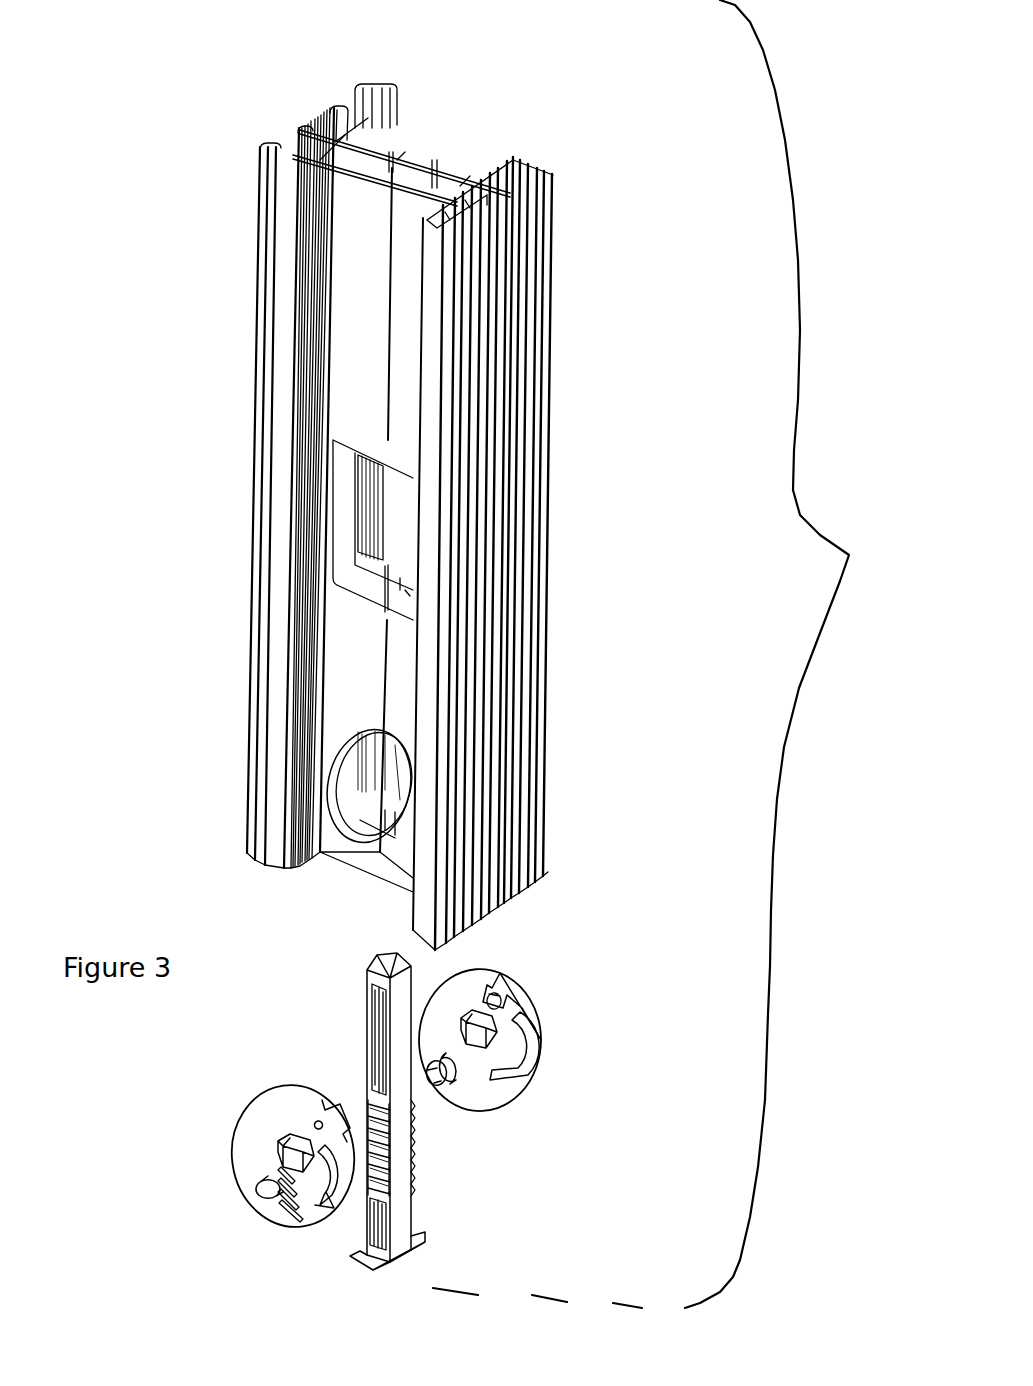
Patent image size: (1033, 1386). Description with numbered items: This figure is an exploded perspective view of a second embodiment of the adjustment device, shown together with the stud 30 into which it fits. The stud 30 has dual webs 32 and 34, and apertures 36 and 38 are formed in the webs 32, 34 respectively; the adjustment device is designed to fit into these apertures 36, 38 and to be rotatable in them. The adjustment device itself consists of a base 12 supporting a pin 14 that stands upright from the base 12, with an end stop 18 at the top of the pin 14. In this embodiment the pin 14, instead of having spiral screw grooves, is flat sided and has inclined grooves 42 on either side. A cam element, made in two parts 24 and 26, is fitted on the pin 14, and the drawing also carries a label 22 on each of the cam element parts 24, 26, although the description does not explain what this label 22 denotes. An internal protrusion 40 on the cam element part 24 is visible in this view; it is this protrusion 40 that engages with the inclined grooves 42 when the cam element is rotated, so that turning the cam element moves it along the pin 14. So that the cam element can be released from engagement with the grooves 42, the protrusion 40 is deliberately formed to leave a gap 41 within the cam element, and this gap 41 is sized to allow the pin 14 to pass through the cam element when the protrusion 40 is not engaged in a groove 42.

The base 12 is at (400, 1253).
The pin 14 is at (368, 1008).
The end stop 18 is at (370, 982).
The hex opening 22 is at (477, 1028).
The cam element part 24 is at (500, 973).
The cam element part 26 is at (232, 1123).
The stud 30 is at (649, 497).
The web 32 is at (403, 133).
The web 34 is at (452, 195).
The aperture 36 is at (358, 747).
The aperture 38 is at (340, 798).
The internal protrusion 40 is at (533, 1057).
The gap 41 is at (472, 1077).
The inclined grooves 42 is at (400, 1142).